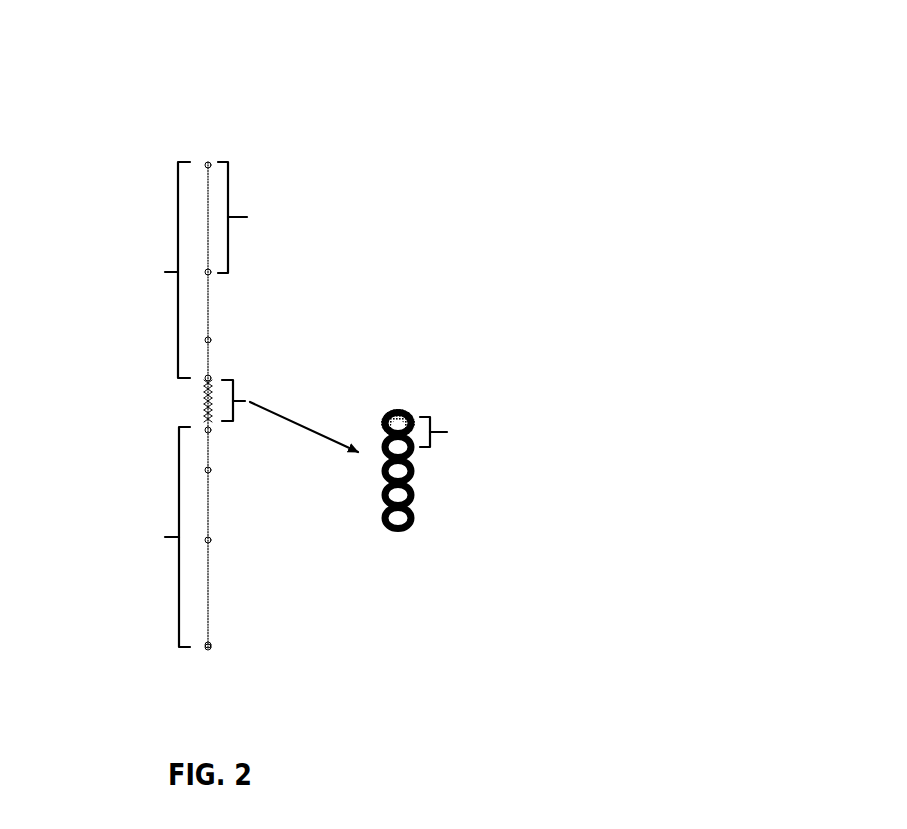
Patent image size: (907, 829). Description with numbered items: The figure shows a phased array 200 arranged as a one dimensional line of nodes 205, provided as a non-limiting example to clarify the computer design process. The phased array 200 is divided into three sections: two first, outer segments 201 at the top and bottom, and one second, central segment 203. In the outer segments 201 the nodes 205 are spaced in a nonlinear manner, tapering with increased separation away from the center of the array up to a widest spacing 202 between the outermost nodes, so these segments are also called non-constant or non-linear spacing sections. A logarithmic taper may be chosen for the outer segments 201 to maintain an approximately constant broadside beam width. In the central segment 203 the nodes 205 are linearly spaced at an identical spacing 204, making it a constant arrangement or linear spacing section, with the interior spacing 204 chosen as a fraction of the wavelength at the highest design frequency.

The phased array 200 is at (870, 58).
The first, outer segments 201 is at (158, 272).
The spacing 202 is at (252, 217).
The second, central segment 203 is at (235, 388).
The spacing 204 is at (455, 432).
The nodes 205 is at (205, 648).